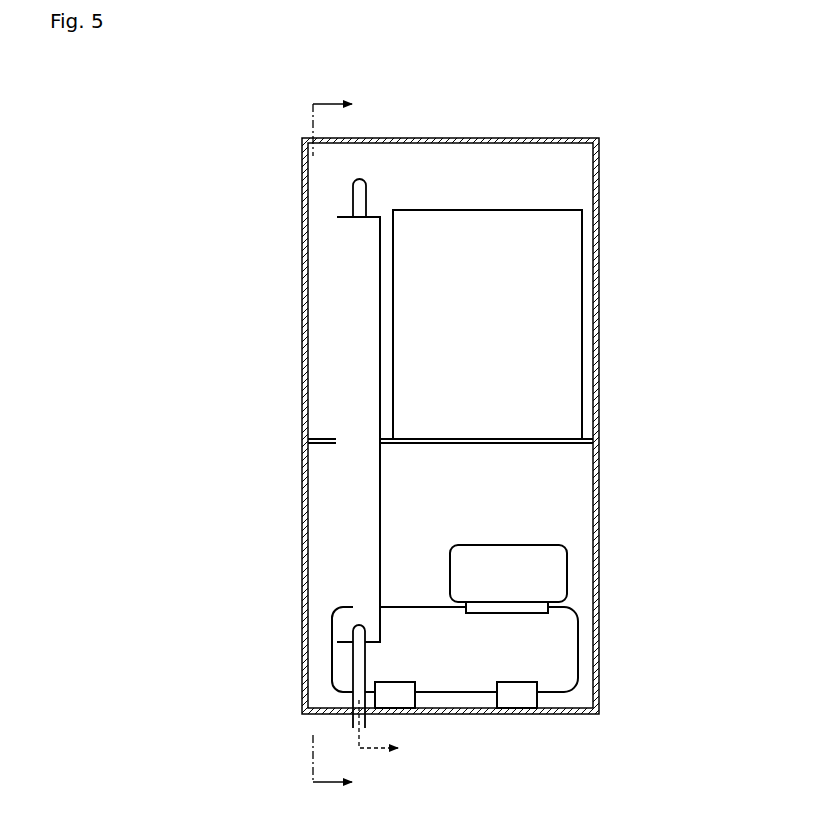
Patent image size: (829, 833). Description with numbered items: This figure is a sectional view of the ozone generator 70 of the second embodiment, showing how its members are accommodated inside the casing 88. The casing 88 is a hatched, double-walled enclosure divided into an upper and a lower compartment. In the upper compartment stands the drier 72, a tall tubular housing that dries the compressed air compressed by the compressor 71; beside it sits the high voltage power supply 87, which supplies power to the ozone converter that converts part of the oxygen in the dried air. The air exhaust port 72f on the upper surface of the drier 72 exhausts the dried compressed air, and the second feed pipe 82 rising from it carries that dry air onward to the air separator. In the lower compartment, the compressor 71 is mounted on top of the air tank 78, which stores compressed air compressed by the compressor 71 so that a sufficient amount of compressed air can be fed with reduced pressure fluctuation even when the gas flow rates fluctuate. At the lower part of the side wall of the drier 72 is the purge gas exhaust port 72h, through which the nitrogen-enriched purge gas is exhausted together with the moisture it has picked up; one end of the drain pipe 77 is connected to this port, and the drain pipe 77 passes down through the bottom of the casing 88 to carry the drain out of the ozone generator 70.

The ozone generator 70 is at (197, 115).
The casing 88 is at (599, 188).
The high voltage power supply 87 is at (502, 334).
The drier 72 is at (369, 334).
The air exhaust port 72f is at (343, 214).
The second feed pipe 82 is at (353, 197).
The compressor 71 is at (567, 573).
The air tank 78 is at (578, 657).
The purge gas exhaust port 72h is at (343, 608).
The drain pipe 77 is at (350, 668).